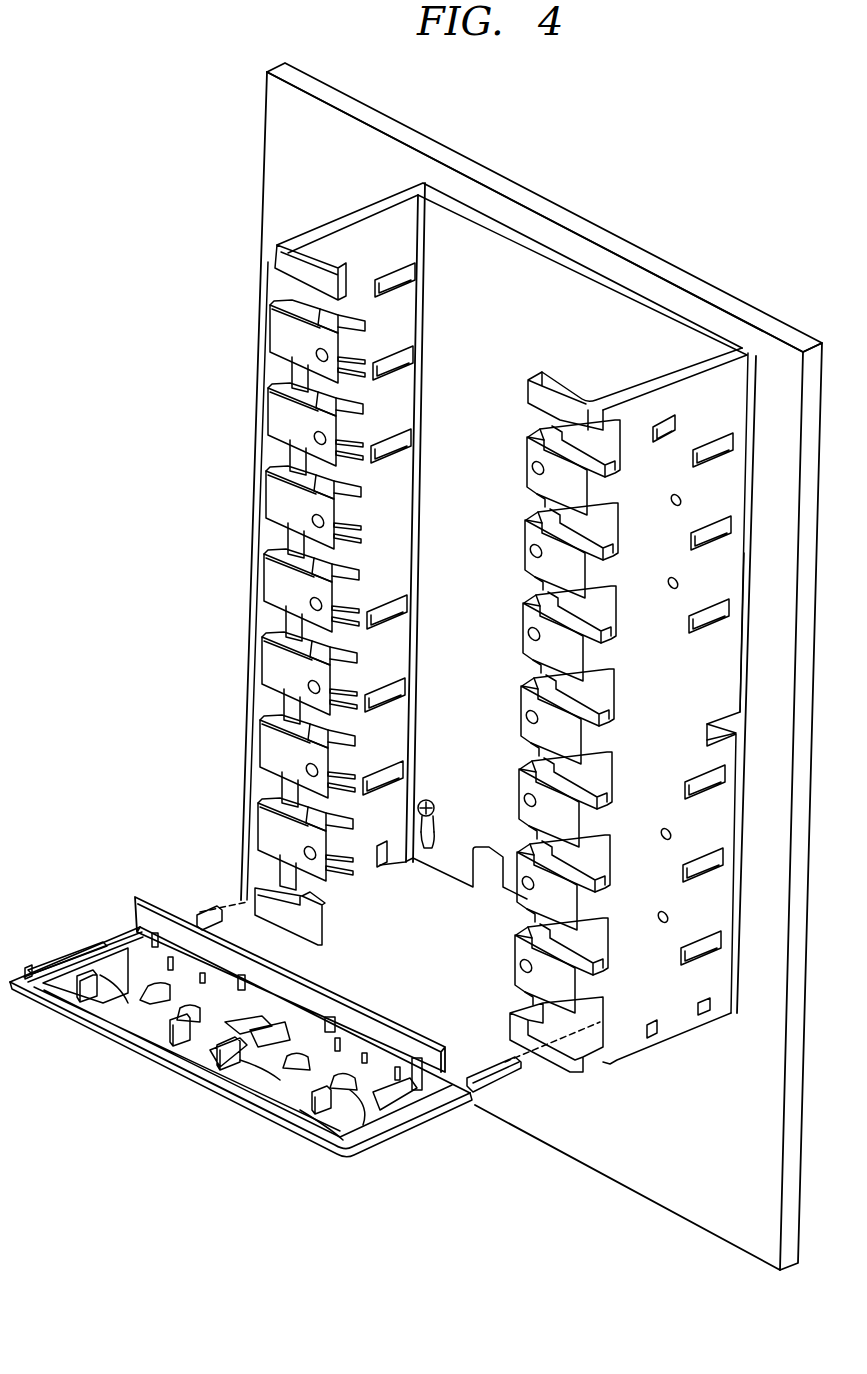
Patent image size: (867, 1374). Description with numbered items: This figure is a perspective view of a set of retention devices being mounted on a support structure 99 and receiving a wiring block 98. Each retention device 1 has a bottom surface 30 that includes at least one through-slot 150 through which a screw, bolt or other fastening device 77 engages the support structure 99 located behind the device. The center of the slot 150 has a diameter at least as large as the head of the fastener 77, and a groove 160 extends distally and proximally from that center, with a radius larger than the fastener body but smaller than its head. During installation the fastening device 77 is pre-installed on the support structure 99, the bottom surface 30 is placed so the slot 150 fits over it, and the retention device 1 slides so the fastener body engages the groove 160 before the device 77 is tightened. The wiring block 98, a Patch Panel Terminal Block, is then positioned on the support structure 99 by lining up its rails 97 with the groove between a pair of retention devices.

The retention device 1 is at (323, 182).
The bottom surface 30 is at (467, 686).
The fastening device 77 is at (457, 828).
The through-slot 150 is at (437, 822).
The groove 160 is at (424, 853).
The rails 97 is at (201, 913).
The wiring block 98 is at (138, 1103).
The support structure 99 is at (777, 800).